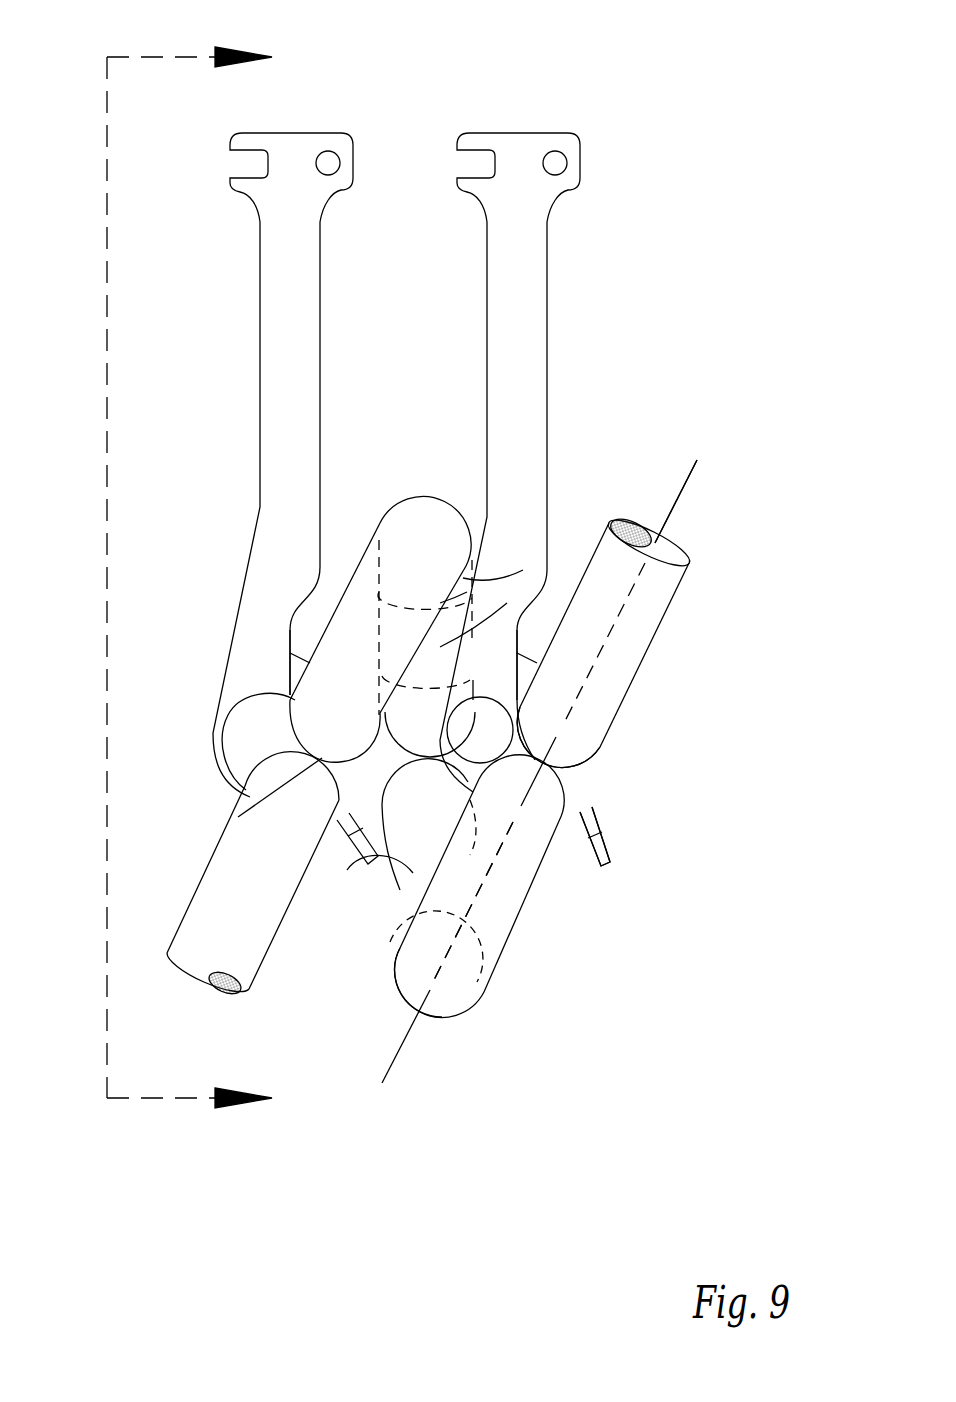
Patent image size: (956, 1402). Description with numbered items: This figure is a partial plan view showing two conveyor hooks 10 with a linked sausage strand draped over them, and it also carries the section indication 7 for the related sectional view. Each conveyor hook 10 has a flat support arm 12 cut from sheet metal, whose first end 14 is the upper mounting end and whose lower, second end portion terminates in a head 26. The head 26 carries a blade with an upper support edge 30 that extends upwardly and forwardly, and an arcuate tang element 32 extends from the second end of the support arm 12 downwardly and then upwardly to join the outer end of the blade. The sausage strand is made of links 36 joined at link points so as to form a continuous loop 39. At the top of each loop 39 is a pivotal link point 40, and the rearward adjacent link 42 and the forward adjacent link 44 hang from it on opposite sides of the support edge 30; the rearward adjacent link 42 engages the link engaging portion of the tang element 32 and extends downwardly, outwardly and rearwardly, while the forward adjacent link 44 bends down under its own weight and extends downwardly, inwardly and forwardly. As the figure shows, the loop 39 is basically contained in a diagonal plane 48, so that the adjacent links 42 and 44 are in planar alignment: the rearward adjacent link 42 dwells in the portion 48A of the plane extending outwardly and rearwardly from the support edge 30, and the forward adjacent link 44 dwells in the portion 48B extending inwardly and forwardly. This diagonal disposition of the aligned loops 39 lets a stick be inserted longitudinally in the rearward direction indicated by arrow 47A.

The section line of FIG. 7 is at (222, 0).
The conveyor hook 10 is at (434, 509).
The support arm 12 is at (292, 387).
The first end 14 is at (302, 133).
The head 26 is at (625, 875).
The upper support edge 30 is at (355, 830).
The arcuate tang element 32 is at (413, 810).
The link 36 is at (428, 710).
The loop 39 is at (297, 620).
The pivotal link point 40 is at (240, 817).
The rearward adjacent link 42 is at (250, 937).
The forward adjacent link 44 is at (350, 625).
The arrow 47A is at (700, 790).
The diagonal plane 48 is at (410, 1082).
The portion of plane 48A is at (500, 855).
The portion of plane 48B is at (678, 515).